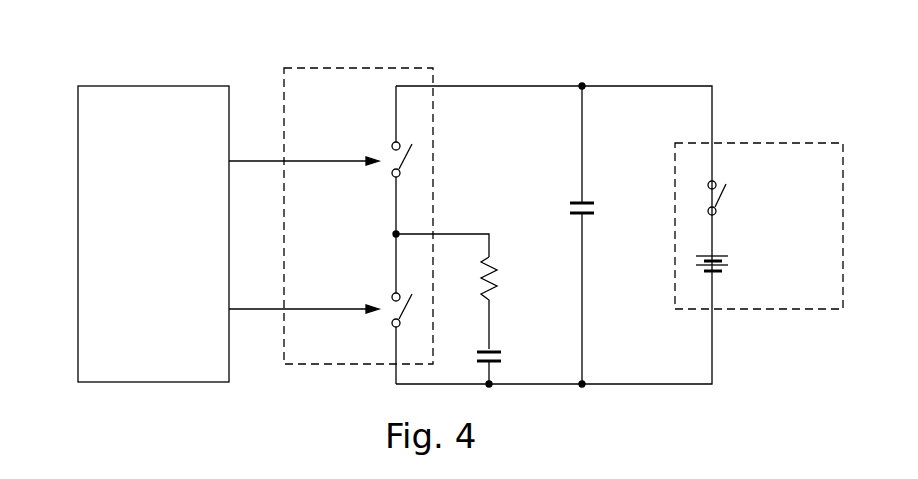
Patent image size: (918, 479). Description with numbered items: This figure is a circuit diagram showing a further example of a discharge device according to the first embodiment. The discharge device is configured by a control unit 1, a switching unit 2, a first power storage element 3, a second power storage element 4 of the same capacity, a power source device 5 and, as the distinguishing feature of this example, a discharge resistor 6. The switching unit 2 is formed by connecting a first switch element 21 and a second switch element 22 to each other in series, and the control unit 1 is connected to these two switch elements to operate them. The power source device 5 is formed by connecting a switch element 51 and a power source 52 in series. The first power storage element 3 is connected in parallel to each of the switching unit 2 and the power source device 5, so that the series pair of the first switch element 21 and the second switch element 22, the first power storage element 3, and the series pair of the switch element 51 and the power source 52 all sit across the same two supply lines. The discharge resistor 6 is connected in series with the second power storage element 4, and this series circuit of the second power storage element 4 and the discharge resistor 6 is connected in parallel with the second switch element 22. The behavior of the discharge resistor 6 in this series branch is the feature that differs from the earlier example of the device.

The control unit 1 is at (90, 86).
The switching unit 2 is at (329, 68).
The first switch element 21 is at (393, 143).
The second switch element 22 is at (393, 293).
The first power storage element 3 is at (590, 202).
The second power storage element 4 is at (498, 347).
The discharge resistor 6 is at (497, 268).
The power source device 5 is at (795, 143).
The switch element 51 is at (722, 196).
The power source 52 is at (730, 257).